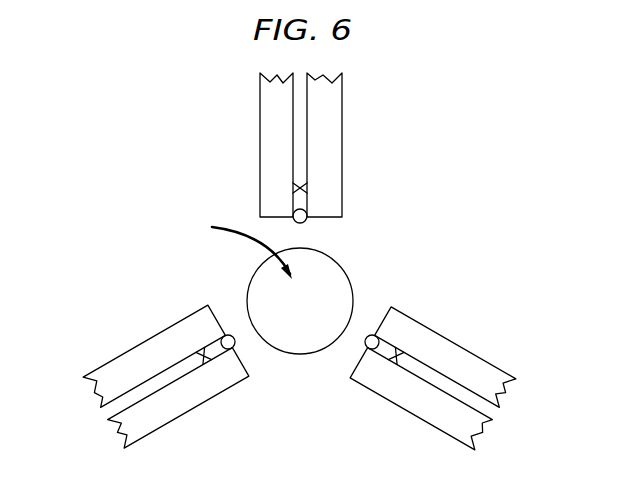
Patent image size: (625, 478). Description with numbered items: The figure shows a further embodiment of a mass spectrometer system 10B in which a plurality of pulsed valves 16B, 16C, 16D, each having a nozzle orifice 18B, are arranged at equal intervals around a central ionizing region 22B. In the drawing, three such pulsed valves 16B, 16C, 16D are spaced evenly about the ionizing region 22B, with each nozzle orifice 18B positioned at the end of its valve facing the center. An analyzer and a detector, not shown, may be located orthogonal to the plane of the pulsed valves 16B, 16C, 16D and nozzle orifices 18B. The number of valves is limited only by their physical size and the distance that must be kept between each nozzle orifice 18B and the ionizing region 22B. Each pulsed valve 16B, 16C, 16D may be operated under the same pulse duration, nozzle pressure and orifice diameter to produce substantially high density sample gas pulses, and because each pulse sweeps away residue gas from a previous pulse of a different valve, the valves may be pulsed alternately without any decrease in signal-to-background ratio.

The mass spectrometer system 10B is at (432, 116).
The pulsed valve 16B is at (292, 188).
The pulsed valve 16C is at (398, 356).
The pulsed valve 16D is at (205, 358).
The nozzle orifice 18B is at (305, 222).
The ionizing region 22B is at (234, 248).